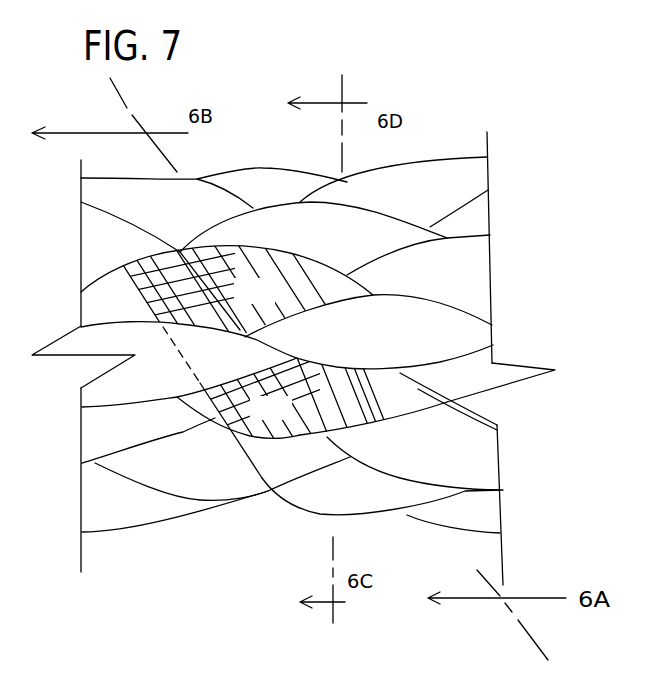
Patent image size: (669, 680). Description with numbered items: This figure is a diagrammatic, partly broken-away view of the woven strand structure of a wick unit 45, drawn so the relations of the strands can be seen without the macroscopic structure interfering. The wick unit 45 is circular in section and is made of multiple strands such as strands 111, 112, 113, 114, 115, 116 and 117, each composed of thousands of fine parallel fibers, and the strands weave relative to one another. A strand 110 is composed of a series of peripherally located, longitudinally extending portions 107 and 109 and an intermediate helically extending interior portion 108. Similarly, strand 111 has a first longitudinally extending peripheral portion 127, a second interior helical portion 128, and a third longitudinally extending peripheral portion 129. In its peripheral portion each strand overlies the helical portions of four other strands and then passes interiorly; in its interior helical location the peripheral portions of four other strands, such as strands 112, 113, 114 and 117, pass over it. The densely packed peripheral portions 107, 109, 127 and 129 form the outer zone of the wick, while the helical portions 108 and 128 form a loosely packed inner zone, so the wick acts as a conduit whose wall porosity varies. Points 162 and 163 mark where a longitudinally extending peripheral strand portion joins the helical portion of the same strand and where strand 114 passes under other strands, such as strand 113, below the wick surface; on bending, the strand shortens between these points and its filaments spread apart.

The wick unit 45 is at (501, 279).
The longitudinally extending peripheral portion 107 is at (152, 188).
The helically extending interior portion 108 is at (274, 303).
The longitudinally extending peripheral portion 109 is at (430, 462).
The strand 110 is at (79, 184).
The strand 111 is at (71, 238).
The strand 112 is at (134, 315).
The strand 113 is at (166, 382).
The strand 114 is at (376, 391).
The strand 115 is at (240, 477).
The strand 116 is at (348, 243).
The strand 117 is at (404, 338).
The first longitudinally extending peripheral portion 127 is at (128, 256).
The second interior helical portion 128 is at (291, 419).
The third longitudinally extending peripheral portion 129 is at (366, 502).
The junction point 162 is at (156, 434).
The junction point 163 is at (427, 390).